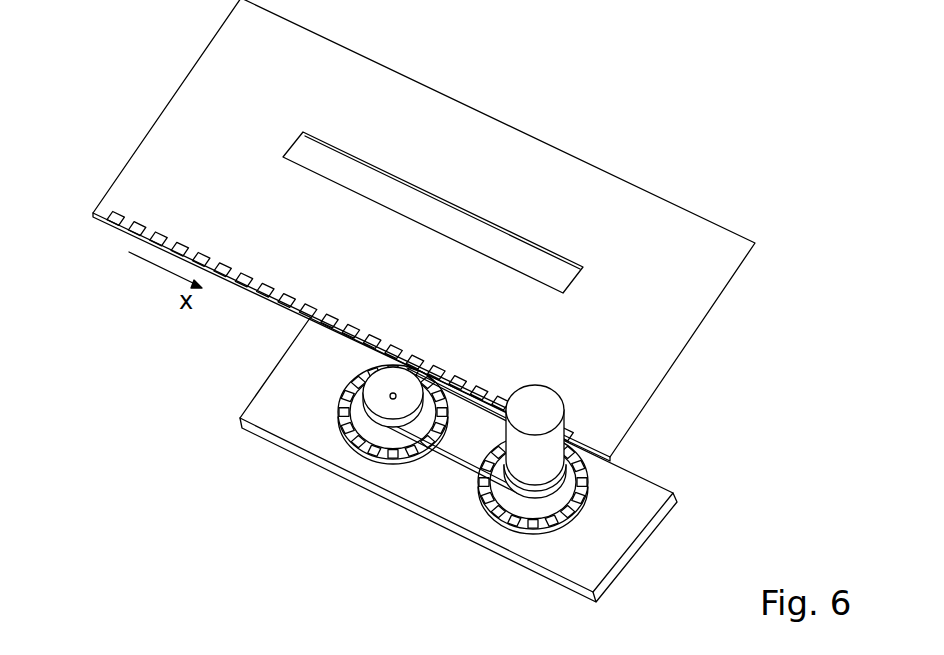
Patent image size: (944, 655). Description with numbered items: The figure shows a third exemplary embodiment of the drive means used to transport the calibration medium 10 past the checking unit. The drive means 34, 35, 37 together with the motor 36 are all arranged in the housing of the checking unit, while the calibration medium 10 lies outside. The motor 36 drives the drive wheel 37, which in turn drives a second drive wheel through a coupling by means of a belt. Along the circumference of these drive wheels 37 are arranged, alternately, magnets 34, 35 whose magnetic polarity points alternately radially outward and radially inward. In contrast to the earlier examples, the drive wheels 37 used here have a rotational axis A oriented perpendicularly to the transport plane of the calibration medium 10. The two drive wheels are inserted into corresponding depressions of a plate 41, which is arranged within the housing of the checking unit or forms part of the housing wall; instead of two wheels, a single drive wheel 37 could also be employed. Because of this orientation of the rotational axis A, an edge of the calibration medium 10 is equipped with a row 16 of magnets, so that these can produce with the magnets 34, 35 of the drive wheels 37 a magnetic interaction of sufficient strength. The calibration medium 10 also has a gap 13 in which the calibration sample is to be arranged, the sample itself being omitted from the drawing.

The calibration medium 10 is at (172, 94).
The gap 13 is at (325, 152).
The row of magnets 16 is at (90, 204).
The plate 41 is at (255, 416).
The magnet 34 is at (560, 522).
The magnet 35 is at (588, 500).
The motor 36 is at (563, 393).
The drive wheel 37 is at (522, 528).
The rotational axis A is at (390, 396).